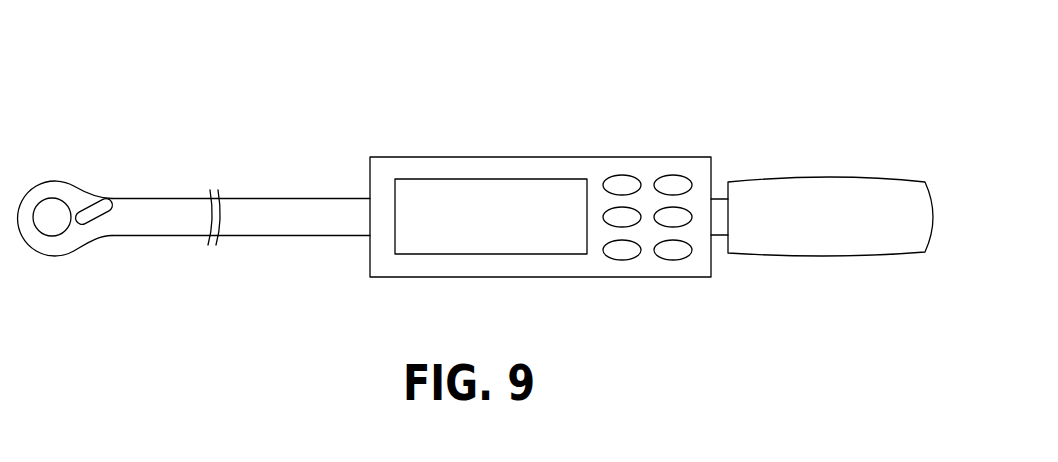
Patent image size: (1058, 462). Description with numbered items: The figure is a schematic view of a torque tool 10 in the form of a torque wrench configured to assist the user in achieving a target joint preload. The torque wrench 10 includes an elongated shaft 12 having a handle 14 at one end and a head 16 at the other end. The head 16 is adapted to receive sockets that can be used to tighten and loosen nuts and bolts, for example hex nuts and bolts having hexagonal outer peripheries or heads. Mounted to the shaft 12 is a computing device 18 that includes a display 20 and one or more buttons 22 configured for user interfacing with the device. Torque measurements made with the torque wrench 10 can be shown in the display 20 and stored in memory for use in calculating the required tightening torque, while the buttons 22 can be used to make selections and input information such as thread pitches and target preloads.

The torque tool 10 is at (289, 55).
The elongated shaft 12 is at (259, 198).
The handle 14 is at (852, 177).
The head 16 is at (60, 180).
The computing device 18 is at (591, 132).
The display 20 is at (477, 226).
The buttons 22 is at (634, 279).